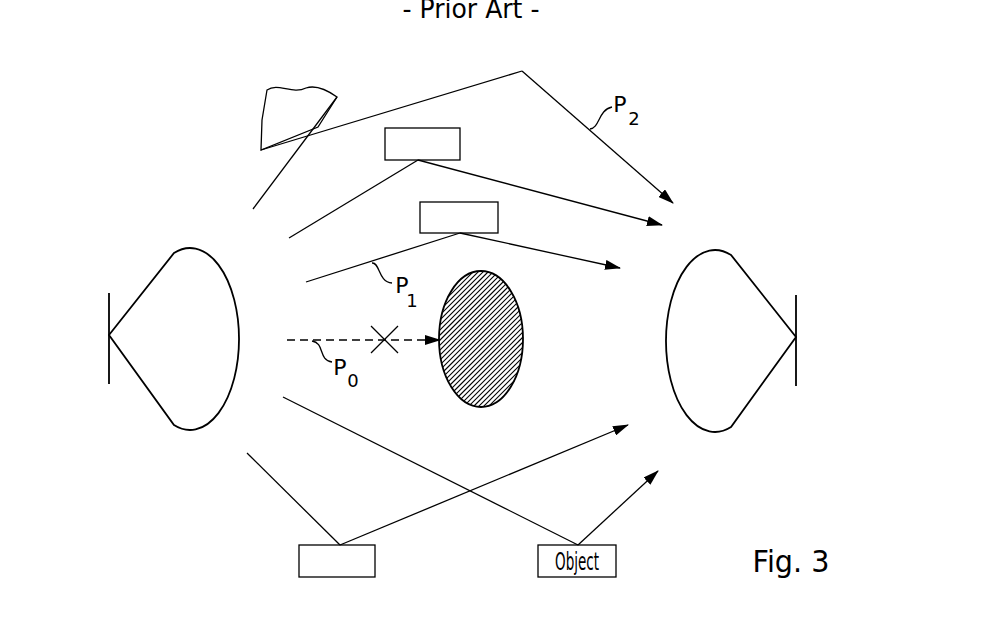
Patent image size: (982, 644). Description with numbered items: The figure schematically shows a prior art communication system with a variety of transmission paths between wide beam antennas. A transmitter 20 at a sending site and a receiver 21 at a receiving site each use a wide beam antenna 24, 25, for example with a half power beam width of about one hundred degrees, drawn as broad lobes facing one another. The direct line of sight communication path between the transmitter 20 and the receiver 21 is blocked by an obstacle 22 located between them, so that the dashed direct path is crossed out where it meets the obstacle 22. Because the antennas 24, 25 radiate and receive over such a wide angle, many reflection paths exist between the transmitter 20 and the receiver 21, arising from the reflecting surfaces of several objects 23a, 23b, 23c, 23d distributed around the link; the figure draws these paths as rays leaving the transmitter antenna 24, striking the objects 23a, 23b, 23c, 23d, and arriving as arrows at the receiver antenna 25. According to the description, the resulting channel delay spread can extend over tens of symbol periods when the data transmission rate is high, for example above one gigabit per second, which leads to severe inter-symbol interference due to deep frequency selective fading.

The transmitter 20 is at (108, 336).
The receiver 21 is at (798, 338).
The obstacle 22 is at (522, 350).
The object 23a is at (337, 97).
The object 23b is at (460, 140).
The object 23c is at (498, 218).
The object 23d is at (375, 556).
The wide beam antenna 24 is at (185, 249).
The wide beam antenna 25 is at (721, 249).